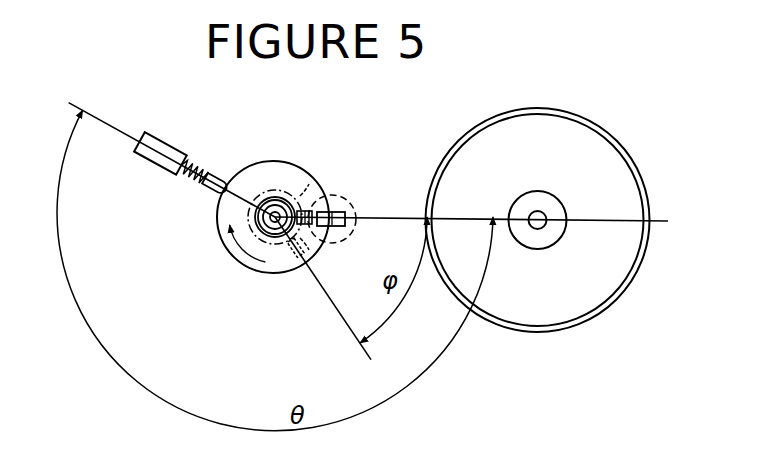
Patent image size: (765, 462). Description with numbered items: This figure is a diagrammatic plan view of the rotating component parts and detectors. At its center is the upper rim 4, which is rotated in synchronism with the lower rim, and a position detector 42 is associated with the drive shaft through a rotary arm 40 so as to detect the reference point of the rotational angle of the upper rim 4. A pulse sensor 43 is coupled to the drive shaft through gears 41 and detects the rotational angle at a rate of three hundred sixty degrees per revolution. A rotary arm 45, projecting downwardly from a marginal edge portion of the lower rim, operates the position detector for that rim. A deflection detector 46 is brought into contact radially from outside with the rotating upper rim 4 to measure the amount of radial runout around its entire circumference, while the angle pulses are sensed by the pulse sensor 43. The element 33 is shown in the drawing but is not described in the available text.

The take-up reel / disc 33 is at (627, 151).
The upper rim 4 is at (218, 238).
The rotary arm 40 is at (296, 188).
The gears 41 is at (312, 191).
The position detector 42 is at (348, 216).
The pulse sensor 43 is at (338, 204).
The rotary arm 45 is at (292, 250).
The deflection detector 46 is at (158, 170).